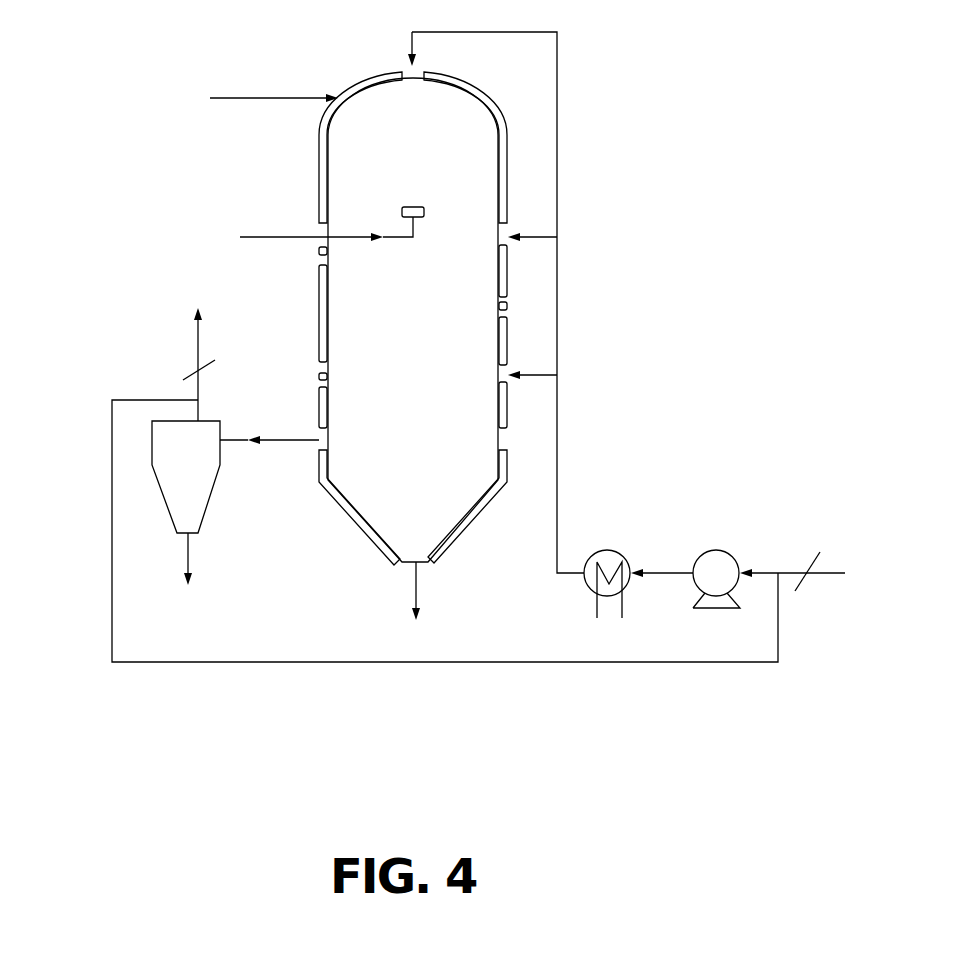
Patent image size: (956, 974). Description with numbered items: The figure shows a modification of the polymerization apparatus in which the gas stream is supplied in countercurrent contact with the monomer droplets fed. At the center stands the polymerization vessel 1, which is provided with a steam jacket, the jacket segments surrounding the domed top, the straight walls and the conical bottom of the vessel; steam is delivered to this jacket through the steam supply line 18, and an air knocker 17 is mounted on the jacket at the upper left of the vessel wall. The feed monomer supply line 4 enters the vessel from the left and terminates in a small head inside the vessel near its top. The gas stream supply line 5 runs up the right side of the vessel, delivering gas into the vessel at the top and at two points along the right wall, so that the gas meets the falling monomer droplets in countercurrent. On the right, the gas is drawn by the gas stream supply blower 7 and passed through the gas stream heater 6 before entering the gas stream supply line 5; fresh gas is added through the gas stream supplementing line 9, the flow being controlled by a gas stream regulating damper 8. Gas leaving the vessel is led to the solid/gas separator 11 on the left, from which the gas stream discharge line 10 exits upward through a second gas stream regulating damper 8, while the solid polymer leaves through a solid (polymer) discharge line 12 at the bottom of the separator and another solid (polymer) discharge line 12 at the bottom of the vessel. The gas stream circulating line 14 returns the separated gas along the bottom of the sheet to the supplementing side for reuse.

The polymerization vessel 1 is at (300, 163).
The feed monomer supply line 4 is at (261, 237).
The gas stream supply line 5 is at (562, 289).
The gas stream heater 6 is at (604, 551).
The gas stream supply blower 7 is at (720, 551).
The gas stream regulating damper 8 is at (811, 561).
The gas stream supplementing line 9 is at (836, 576).
The gas stream discharge line 10 is at (195, 343).
The solid/gas separator 11 is at (214, 490).
The solid (polymer) discharge line 12 is at (191, 548).
The gas stream circulating line 14 is at (392, 663).
The air knocker 17 is at (317, 253).
The steam supply line 18 is at (253, 97).